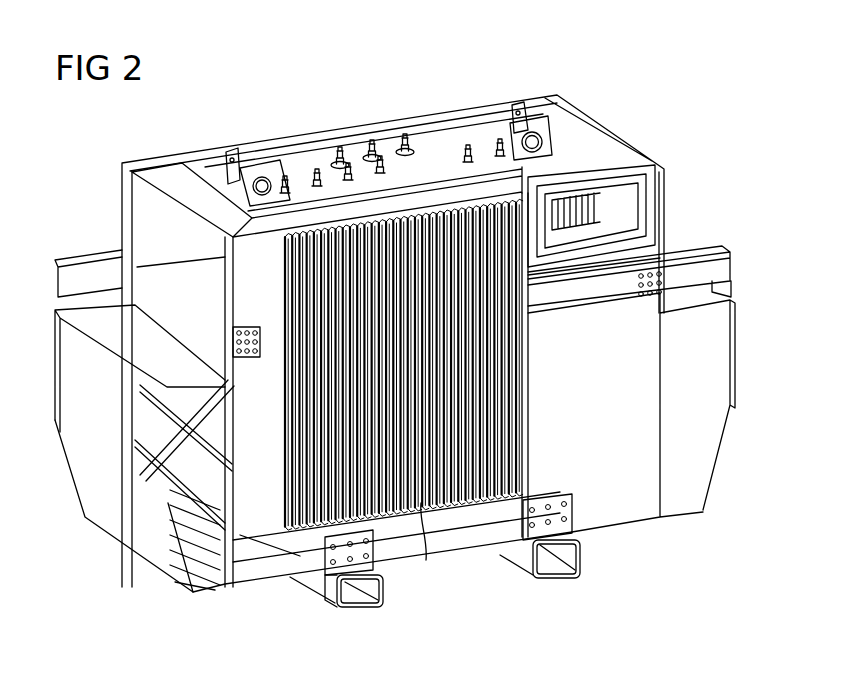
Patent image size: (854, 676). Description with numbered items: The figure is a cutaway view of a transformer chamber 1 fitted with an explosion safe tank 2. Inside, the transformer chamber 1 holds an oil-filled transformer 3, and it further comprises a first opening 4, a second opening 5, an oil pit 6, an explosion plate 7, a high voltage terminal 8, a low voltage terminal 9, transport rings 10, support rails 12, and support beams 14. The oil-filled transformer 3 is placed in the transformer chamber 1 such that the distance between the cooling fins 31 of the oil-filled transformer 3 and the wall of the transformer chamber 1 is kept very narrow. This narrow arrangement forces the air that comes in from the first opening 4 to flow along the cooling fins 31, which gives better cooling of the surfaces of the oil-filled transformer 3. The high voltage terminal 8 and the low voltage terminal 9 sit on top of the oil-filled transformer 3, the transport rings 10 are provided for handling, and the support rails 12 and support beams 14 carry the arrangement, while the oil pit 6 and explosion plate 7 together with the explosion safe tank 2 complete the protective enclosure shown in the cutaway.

The transformer chamber 1 is at (663, 126).
The explosion safe tank 2 is at (617, 507).
The oil-filled transformer 3 is at (248, 514).
The first opening 4 is at (186, 520).
The second opening 5 is at (620, 200).
The oil pit 6 is at (205, 580).
The explosion plate 7 is at (157, 410).
The high voltage terminal 8 is at (372, 163).
The low voltage terminal 9 is at (468, 150).
The transport rings 10 is at (272, 172).
The support rails 12 is at (86, 262).
The support beams 14 is at (357, 600).
The cooling fins 31 is at (426, 560).